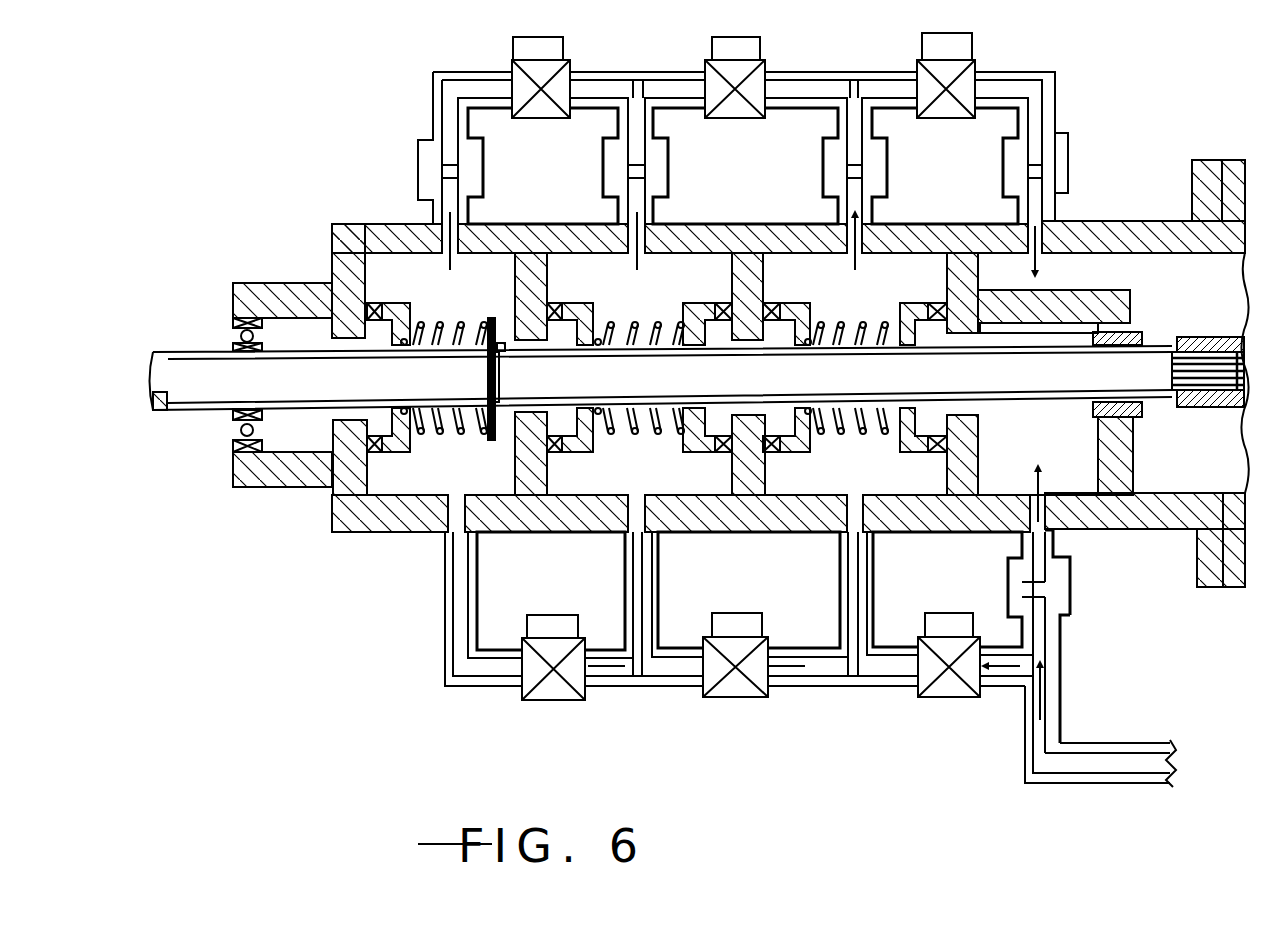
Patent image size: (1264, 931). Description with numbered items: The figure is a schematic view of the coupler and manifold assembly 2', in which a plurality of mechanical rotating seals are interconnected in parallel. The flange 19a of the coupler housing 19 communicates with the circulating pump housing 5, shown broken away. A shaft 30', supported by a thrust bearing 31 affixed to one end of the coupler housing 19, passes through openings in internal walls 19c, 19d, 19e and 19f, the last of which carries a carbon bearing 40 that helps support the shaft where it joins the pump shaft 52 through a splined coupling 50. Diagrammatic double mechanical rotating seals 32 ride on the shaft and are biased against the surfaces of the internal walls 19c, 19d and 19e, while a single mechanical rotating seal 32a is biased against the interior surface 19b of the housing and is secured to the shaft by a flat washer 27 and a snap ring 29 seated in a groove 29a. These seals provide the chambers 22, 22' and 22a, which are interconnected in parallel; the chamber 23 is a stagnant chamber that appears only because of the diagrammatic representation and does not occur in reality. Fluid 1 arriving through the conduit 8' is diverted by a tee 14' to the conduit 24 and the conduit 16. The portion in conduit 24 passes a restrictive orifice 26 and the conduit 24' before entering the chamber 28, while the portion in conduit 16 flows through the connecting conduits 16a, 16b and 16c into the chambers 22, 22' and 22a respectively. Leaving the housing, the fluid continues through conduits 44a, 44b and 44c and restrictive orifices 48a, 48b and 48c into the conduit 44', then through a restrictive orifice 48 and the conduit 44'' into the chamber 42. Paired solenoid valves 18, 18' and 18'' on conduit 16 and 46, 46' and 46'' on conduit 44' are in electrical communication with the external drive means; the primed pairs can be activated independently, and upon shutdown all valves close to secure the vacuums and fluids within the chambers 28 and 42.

The fluid 1 is at (1040, 705).
The coupler and manifold assembly 2' is at (397, 643).
The circulating pump housing 5 is at (1235, 595).
The conduit 8' is at (1100, 752).
The tee 14' is at (1088, 642).
The conduit 16 is at (1000, 686).
The connecting conduit 16a is at (840, 600).
The connecting conduit 16b is at (628, 598).
The connecting conduit 16c is at (445, 612).
The solenoid valve 18 is at (941, 682).
The solenoid valve 18' is at (728, 683).
The solenoid valve 18'' is at (546, 685).
The coupler housing 19 is at (880, 522).
The flange 19a is at (1190, 178).
The interior surface 19b is at (335, 268).
The internal wall 19c is at (528, 300).
The internal wall 19d is at (735, 292).
The internal wall 19e is at (955, 280).
The internal wall 19f is at (1100, 460).
The chamber 22 is at (846, 441).
The chamber 22' is at (639, 441).
The chamber 22a is at (456, 560).
The stagnant chamber 23 is at (792, 335).
The conduit 24 is at (1101, 679).
The conduit 24' is at (1085, 572).
The restrictive orifice 26 is at (1050, 605).
The flat washer 27 is at (488, 320).
The chamber 28 is at (1038, 456).
The snap ring 29 is at (504, 349).
The groove 29a is at (490, 383).
The shaft 30' is at (634, 346).
The thrust bearing 31 is at (240, 448).
The double mechanical rotating seal 32 is at (920, 475).
The single mechanical rotating seal 32a is at (395, 465).
The carbon bearing 40 is at (1128, 327).
The chamber 42 is at (1143, 283).
The conduit 44' is at (710, 126).
The conduit 44'' is at (1001, 161).
The conduit 44a is at (437, 213).
The conduit 44b is at (625, 210).
The conduit 44c is at (838, 210).
The solenoid valve 46 is at (980, 61).
The solenoid valve 46' is at (760, 62).
The solenoid valve 46'' is at (572, 62).
The restrictive orifice 48 is at (1070, 165).
The restrictive orifice 48a is at (490, 180).
The restrictive orifice 48b is at (672, 170).
The restrictive orifice 48c is at (890, 172).
The splined coupling 50 is at (1220, 412).
The pump shaft 52 is at (1210, 410).